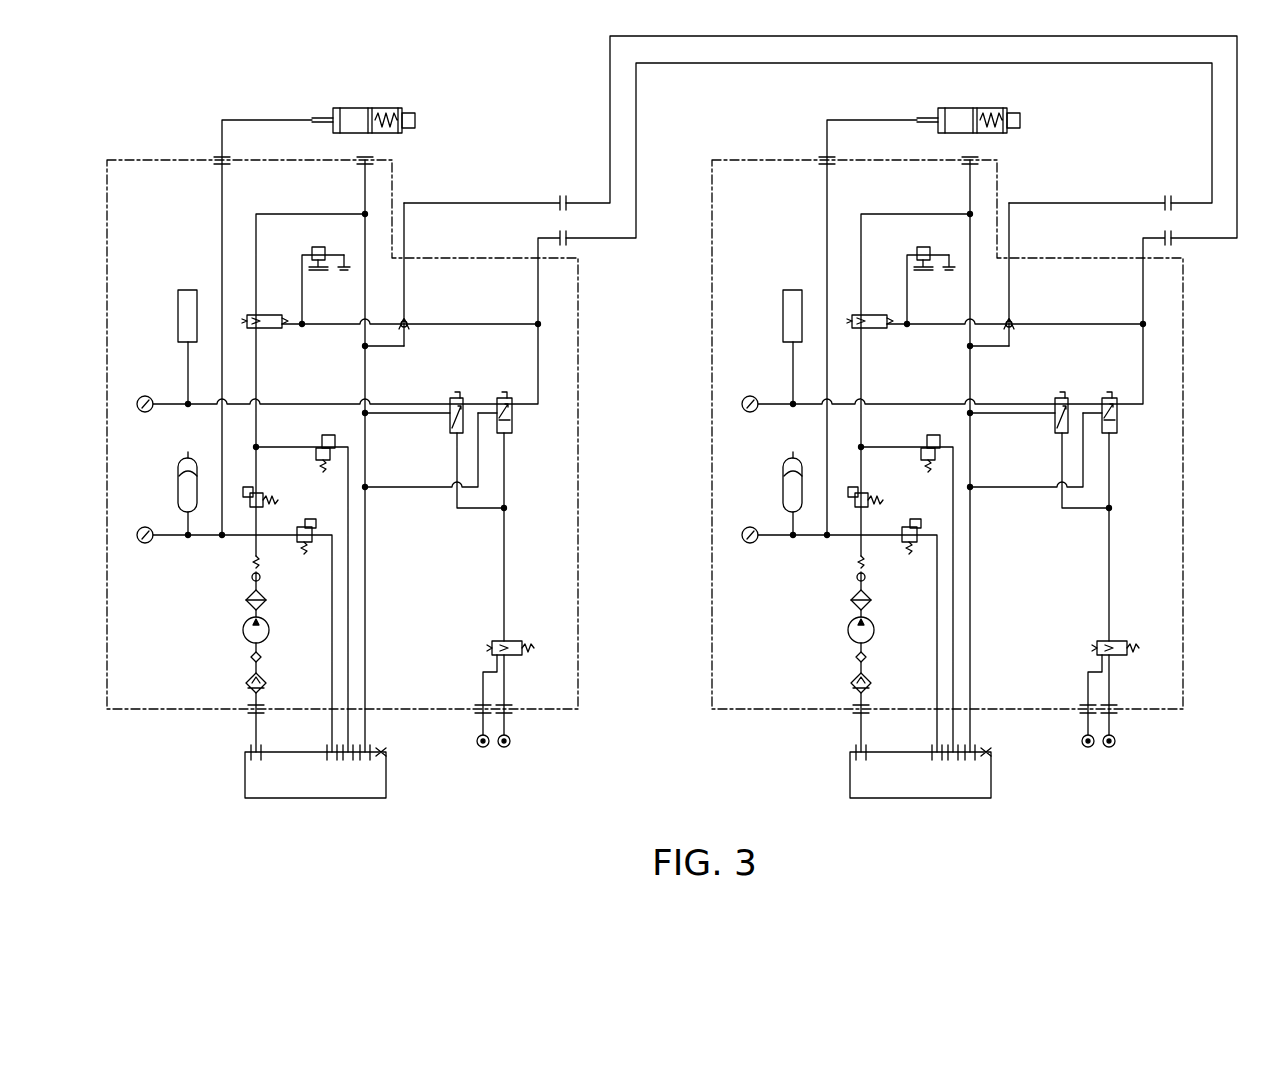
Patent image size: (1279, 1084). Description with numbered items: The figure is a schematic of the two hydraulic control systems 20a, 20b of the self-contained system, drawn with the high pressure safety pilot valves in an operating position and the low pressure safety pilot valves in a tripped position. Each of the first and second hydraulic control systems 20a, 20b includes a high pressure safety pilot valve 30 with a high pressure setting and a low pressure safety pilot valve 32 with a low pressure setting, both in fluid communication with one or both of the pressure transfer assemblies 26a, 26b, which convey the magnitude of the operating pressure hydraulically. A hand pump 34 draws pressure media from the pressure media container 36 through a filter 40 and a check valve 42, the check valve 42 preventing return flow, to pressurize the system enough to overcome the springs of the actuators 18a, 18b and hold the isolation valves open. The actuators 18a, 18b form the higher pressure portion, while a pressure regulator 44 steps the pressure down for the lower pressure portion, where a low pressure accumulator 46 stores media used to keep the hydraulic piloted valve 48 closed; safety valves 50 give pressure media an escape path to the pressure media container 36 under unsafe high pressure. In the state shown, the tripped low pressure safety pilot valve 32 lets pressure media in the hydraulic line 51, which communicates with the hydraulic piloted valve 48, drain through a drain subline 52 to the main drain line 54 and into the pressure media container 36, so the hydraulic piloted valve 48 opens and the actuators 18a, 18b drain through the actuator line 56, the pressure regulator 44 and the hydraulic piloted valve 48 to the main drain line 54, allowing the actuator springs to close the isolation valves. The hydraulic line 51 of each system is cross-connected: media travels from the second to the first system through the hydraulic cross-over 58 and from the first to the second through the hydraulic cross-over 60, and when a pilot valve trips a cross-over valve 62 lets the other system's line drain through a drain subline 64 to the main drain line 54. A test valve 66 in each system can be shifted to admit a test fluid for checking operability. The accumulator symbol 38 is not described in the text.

The actuator 18a is at (345, 107).
The actuator 18b is at (952, 105).
The first hydraulic control system 20a is at (588, 724).
The second hydraulic control system 20b is at (992, 473).
The pressure transfer assembly 26a is at (510, 746).
The pressure transfer assembly 26b is at (1130, 761).
The high pressure safety pilot valve 30 is at (450, 421).
The low pressure safety pilot valve 32 is at (512, 430).
The hand pump 34 is at (243, 634).
The pressure media container 36 is at (260, 778).
The accumulator 38 is at (178, 492).
The filter 40 is at (248, 683).
The check valve 42 is at (252, 578).
The pressure regulator 44 is at (248, 493).
The low pressure accumulator 46 is at (178, 312).
The hydraulic piloted valve 48 is at (265, 330).
The safety valve 50 is at (305, 520).
The hydraulic line 51 is at (470, 324).
The drain subline 52 is at (410, 487).
The main drain line 54 is at (366, 622).
The actuator line 56 is at (222, 219).
The hydraulic cross-over 58 is at (610, 102).
The hydraulic cross-over 60 is at (636, 120).
The cross-over valve 62 is at (410, 322).
The drain subline 64 is at (393, 347).
The test valve 66 is at (510, 641).